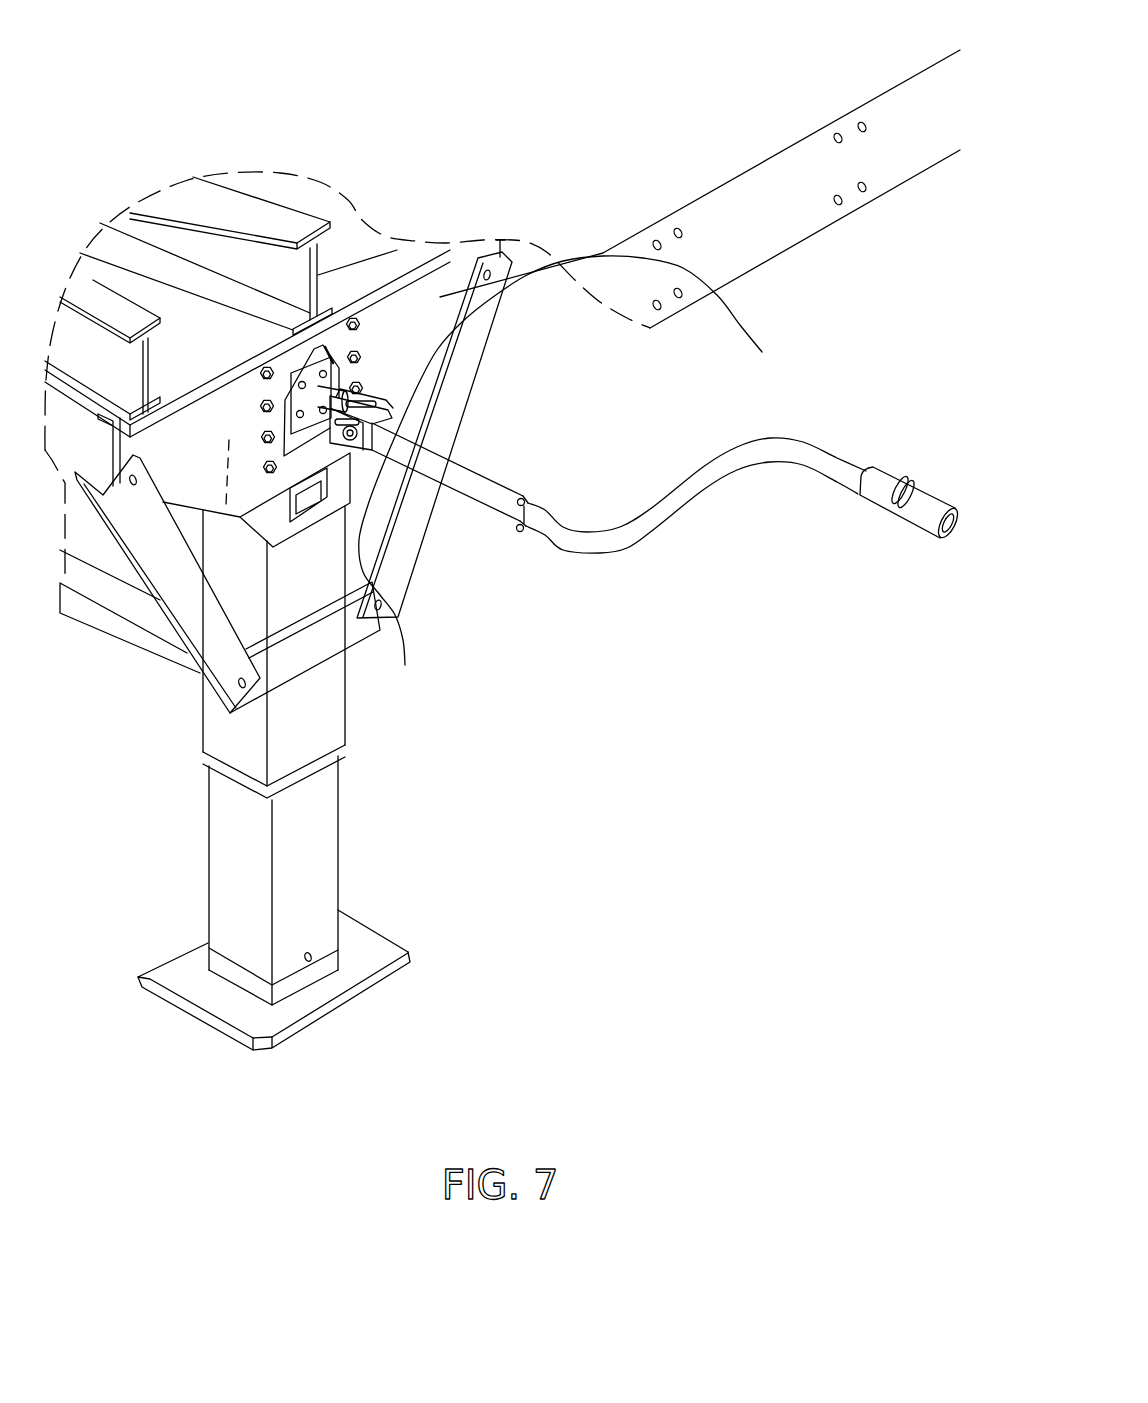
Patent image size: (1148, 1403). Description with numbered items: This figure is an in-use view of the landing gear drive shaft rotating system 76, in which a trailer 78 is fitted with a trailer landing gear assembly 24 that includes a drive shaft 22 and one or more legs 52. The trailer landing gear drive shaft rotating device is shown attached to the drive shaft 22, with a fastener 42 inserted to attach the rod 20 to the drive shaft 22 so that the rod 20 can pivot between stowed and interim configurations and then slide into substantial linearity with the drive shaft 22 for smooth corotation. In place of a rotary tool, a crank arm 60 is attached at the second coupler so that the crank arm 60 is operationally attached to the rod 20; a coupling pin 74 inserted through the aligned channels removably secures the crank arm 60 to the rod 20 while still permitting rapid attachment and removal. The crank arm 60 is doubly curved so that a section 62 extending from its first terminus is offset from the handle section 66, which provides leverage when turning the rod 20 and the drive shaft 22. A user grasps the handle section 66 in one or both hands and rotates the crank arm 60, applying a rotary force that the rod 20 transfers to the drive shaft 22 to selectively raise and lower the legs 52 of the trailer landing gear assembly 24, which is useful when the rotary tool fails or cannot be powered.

The landing gear drive shaft rotating system 76 is at (522, 147).
The trailer 78 is at (766, 227).
The fastener 42 is at (352, 440).
The drive shaft 22 is at (344, 348).
The rod 20 is at (482, 490).
The coupling pin 74 is at (527, 495).
The section of the crank arm 62 is at (543, 533).
The crank arm 60 is at (716, 500).
The handle section 66 is at (885, 482).
The trailer landing gear assembly 24 is at (225, 507).
The legs 52 is at (320, 853).